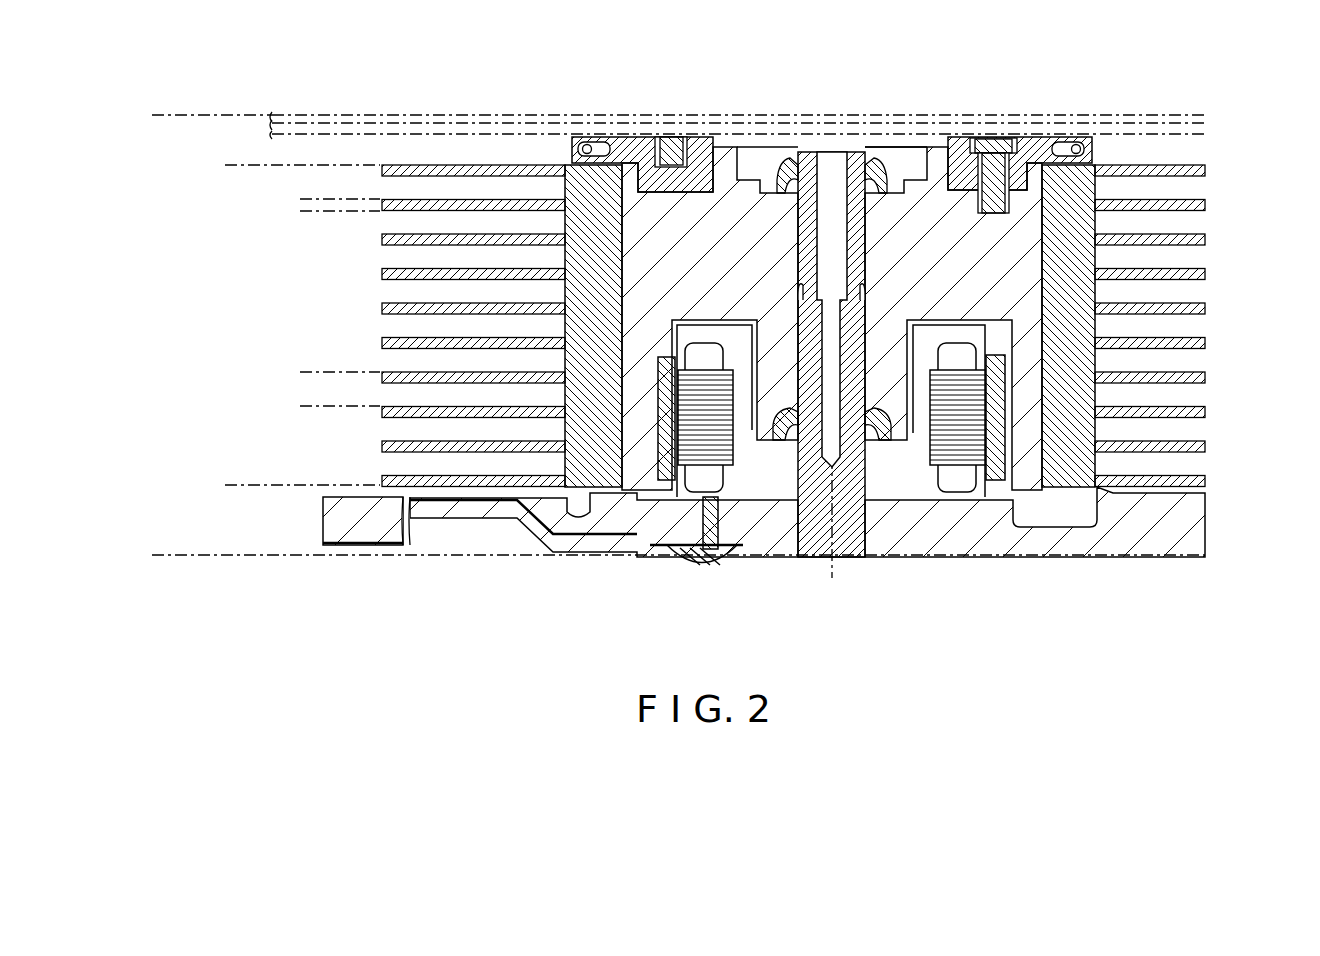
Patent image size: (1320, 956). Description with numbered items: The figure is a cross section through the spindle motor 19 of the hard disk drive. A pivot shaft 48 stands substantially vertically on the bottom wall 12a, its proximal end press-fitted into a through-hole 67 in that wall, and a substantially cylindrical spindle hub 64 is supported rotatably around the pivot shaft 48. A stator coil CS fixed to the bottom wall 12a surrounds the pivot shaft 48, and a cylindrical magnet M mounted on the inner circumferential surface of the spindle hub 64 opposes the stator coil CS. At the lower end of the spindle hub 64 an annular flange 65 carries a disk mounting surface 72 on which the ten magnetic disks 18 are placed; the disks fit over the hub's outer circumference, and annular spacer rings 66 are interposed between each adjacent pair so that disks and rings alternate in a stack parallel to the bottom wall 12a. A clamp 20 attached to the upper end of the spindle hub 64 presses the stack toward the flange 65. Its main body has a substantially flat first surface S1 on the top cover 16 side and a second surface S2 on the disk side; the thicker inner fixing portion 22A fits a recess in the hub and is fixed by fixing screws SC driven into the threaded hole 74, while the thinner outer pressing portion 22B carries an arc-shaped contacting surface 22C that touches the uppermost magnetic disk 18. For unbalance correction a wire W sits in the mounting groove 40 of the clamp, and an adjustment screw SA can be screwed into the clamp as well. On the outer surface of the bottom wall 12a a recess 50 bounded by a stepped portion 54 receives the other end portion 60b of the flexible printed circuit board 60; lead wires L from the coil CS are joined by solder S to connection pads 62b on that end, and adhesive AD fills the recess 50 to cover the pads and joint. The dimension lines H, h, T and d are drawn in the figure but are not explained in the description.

The bottom wall 12a is at (1152, 540).
The top cover 16 is at (388, 112).
The magnetic disks 18 is at (465, 278).
The spindle motor 19 is at (1085, 100).
The clamp 20 is at (700, 145).
The fixing portion 22A is at (960, 165).
The pressing portion 22B is at (572, 148).
The contacting surface 22C is at (566, 180).
The mounting groove 40 is at (600, 148).
The pivot shaft 48 is at (858, 490).
The recess 50 is at (733, 570).
The stepped portion 54 is at (648, 556).
The flexible printed circuit board 60 is at (372, 548).
The other end portion 60b is at (640, 547).
The connection pads 62b is at (680, 565).
The spindle hub 64 is at (905, 210).
The flange 65 is at (580, 500).
The spacer rings 66 is at (1085, 285).
The through-hole 67 is at (893, 490).
The disk mounting surface 72 is at (567, 455).
The threaded hole 74 is at (988, 210).
The wire W is at (585, 146).
The adjustment screw SA is at (662, 137).
The fixing screws SC is at (993, 150).
The first surface S1 is at (1025, 138).
The second surface S2 is at (697, 195).
The magnet M is at (666, 358).
The stator coil CS is at (707, 385).
The lead wires L is at (715, 505).
The solder S is at (690, 560).
The adhesive AD is at (715, 566).
The height H is at (181, 552).
The fin stack height h is at (242, 168).
The fin thickness T is at (308, 178).
The fin pitch d is at (308, 426).